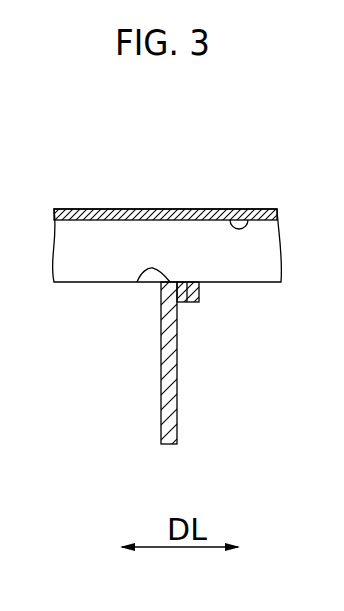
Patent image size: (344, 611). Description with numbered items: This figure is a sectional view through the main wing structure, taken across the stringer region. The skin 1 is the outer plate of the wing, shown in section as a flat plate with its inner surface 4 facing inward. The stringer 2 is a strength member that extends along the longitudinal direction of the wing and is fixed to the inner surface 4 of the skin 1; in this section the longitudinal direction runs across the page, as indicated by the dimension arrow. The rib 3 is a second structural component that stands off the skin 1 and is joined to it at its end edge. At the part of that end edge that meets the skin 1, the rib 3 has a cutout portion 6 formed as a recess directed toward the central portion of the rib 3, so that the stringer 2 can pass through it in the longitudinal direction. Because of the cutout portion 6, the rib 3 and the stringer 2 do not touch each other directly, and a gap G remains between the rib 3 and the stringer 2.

The skin 1 is at (163, 236).
The stringer 2 is at (120, 237).
The rib 3 is at (172, 397).
The inner surface 4 is at (250, 215).
The cutout portion 6 is at (137, 282).
The gap G is at (187, 302).